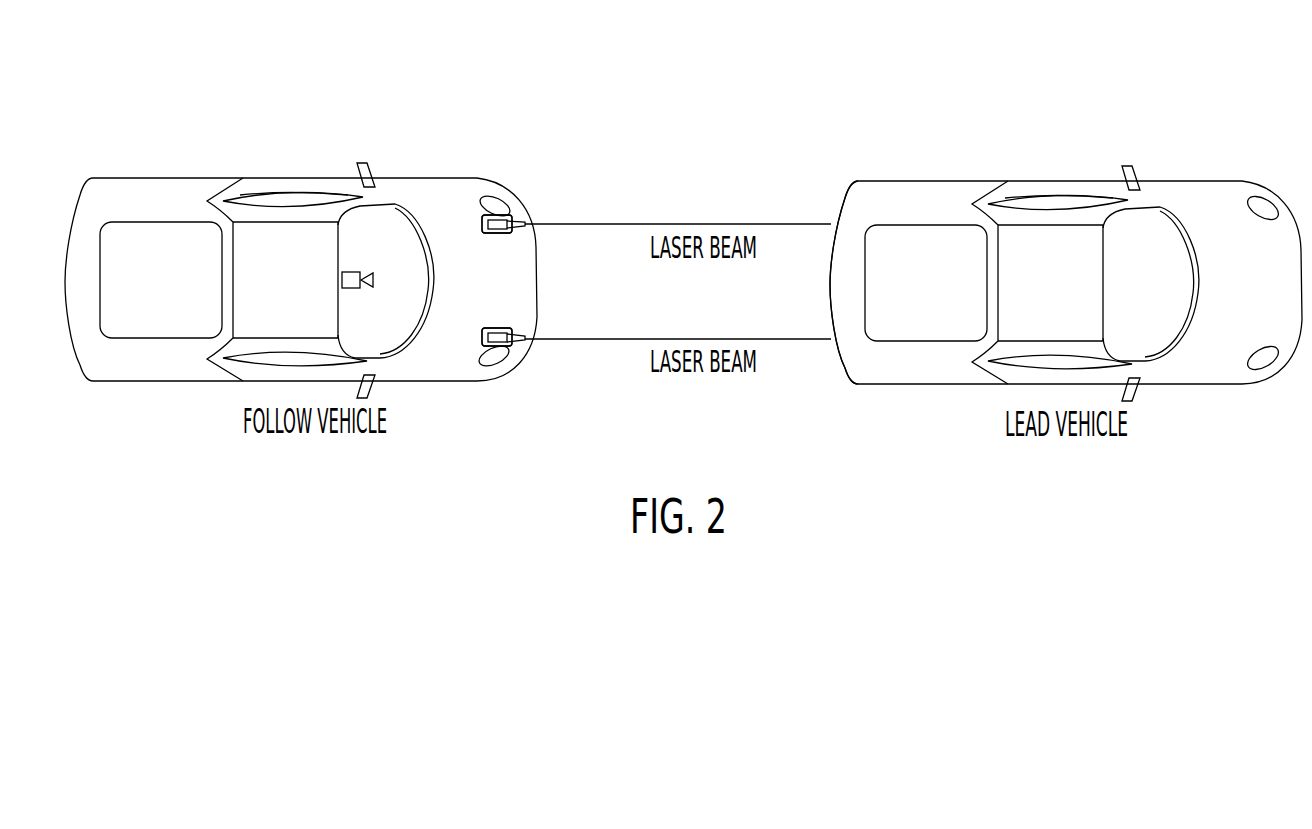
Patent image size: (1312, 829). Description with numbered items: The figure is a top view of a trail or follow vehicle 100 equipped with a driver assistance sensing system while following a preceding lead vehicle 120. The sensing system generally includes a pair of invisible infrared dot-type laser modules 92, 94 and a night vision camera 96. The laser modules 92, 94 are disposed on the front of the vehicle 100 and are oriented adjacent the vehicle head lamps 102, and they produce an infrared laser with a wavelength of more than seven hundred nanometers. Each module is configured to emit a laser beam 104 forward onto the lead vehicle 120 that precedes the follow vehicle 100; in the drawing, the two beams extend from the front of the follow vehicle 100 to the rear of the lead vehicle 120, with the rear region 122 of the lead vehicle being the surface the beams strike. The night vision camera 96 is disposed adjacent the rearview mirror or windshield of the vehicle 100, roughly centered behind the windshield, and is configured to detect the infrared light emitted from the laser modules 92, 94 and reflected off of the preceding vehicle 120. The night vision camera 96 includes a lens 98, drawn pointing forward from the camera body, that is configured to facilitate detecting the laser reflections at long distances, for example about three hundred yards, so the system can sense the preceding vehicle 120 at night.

The vehicle 100 is at (218, 104).
The lead vehicle 120 is at (1098, 107).
The rear end of lead vehicle 122 is at (830, 284).
The night vision camera 96 is at (347, 271).
The lens 98 is at (375, 271).
The vehicle head lamps 102 is at (496, 209).
The laser beam 104 is at (616, 223).
The laser module 94 is at (488, 234).
The laser module 92 is at (496, 329).